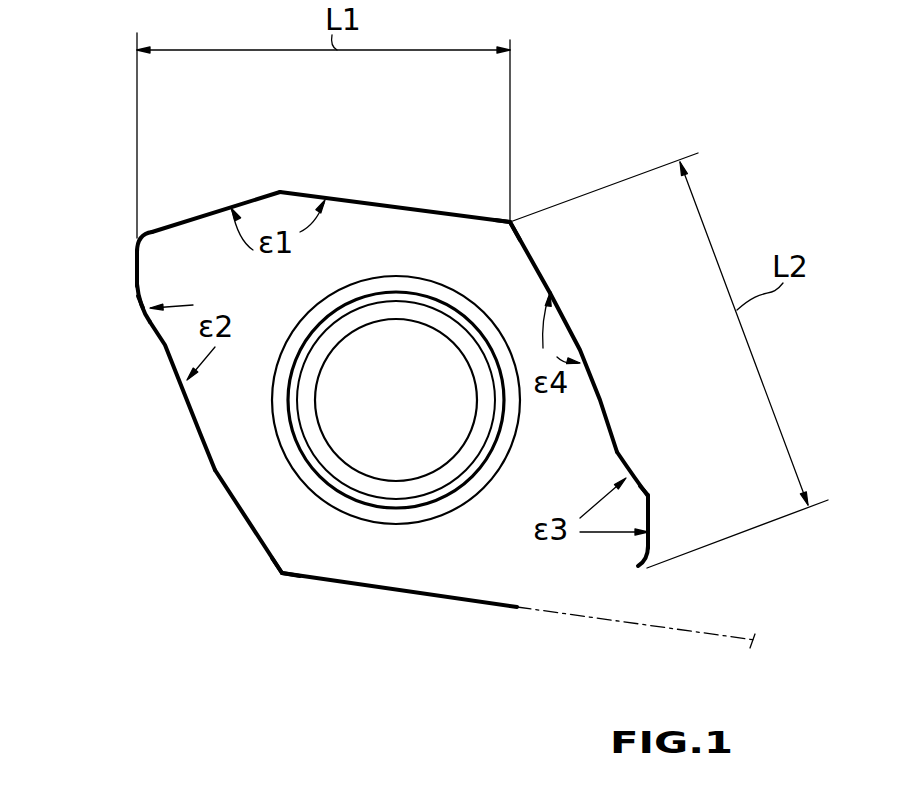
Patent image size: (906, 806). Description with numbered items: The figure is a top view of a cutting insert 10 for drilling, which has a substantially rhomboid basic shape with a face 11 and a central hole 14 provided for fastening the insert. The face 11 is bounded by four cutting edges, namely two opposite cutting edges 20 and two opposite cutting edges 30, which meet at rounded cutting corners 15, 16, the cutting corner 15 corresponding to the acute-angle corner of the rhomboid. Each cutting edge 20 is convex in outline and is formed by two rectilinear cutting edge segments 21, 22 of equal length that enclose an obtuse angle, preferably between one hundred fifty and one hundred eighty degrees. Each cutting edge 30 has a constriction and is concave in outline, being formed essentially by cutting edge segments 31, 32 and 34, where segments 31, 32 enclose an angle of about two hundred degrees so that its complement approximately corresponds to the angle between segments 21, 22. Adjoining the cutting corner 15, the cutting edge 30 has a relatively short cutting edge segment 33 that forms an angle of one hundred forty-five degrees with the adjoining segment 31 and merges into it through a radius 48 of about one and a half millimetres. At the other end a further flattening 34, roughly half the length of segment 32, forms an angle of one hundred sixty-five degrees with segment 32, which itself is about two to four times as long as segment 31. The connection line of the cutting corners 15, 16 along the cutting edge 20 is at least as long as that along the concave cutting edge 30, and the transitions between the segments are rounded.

The cutting insert 10 is at (529, 160).
The face 11 is at (313, 560).
The hole 14 is at (410, 388).
The cutting corner 15 is at (121, 222).
The cutting corner 16 is at (552, 181).
The cutting edge 20 is at (288, 145).
The cutting edge segment 21 is at (200, 212).
The cutting edge segment 22 is at (413, 213).
The cutting edge 30 is at (139, 394).
The cutting edge segment 31 is at (155, 325).
The cutting edge segment 32 is at (197, 430).
The cutting edge segment 33 is at (135, 263).
The flattening 34 is at (240, 513).
The radius 48 is at (142, 305).